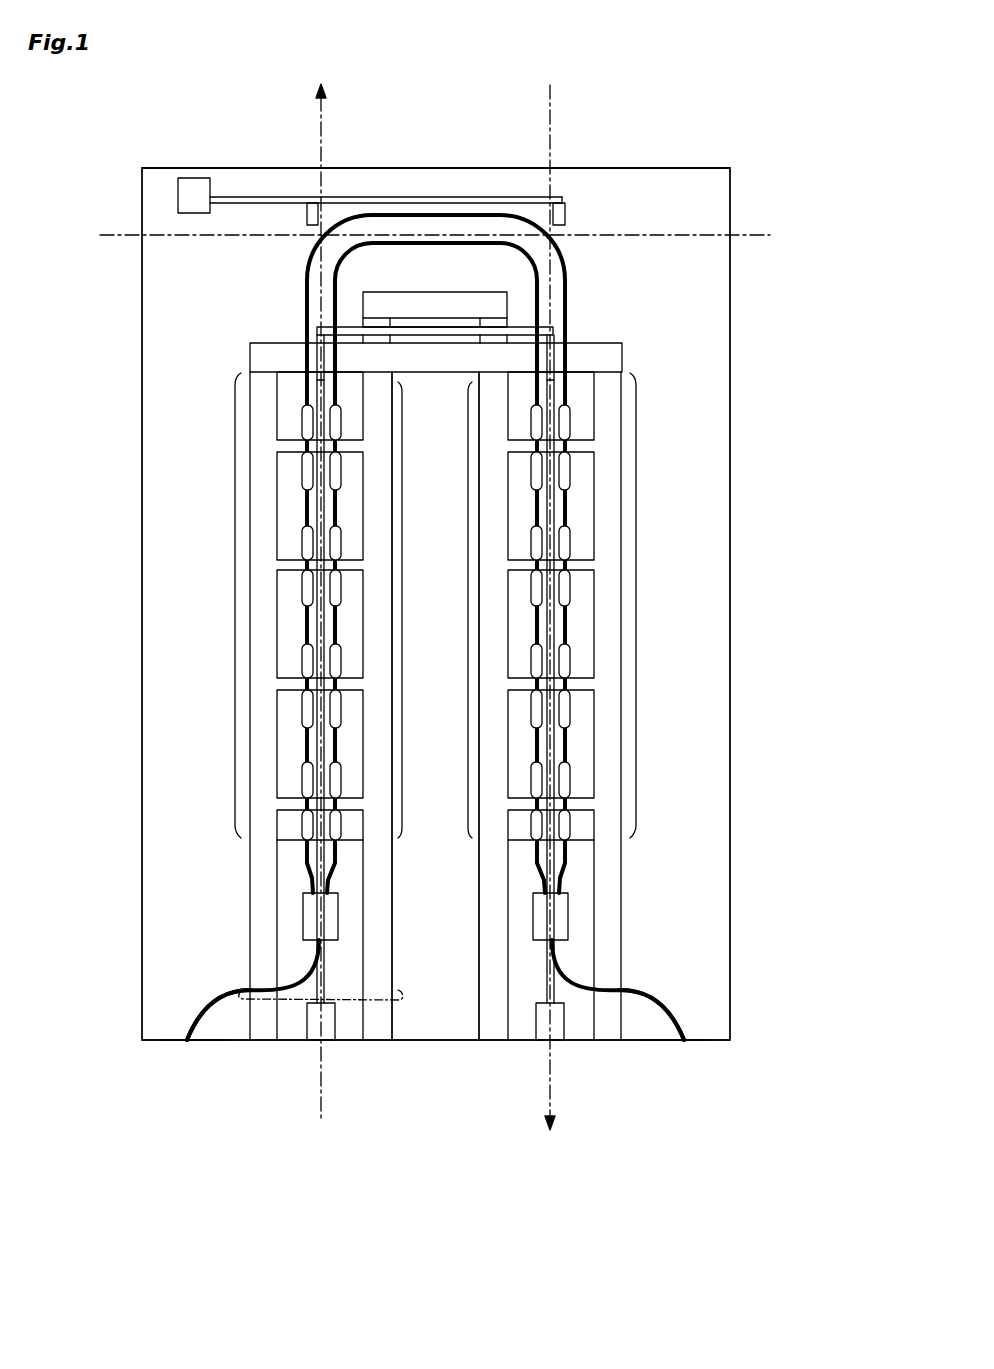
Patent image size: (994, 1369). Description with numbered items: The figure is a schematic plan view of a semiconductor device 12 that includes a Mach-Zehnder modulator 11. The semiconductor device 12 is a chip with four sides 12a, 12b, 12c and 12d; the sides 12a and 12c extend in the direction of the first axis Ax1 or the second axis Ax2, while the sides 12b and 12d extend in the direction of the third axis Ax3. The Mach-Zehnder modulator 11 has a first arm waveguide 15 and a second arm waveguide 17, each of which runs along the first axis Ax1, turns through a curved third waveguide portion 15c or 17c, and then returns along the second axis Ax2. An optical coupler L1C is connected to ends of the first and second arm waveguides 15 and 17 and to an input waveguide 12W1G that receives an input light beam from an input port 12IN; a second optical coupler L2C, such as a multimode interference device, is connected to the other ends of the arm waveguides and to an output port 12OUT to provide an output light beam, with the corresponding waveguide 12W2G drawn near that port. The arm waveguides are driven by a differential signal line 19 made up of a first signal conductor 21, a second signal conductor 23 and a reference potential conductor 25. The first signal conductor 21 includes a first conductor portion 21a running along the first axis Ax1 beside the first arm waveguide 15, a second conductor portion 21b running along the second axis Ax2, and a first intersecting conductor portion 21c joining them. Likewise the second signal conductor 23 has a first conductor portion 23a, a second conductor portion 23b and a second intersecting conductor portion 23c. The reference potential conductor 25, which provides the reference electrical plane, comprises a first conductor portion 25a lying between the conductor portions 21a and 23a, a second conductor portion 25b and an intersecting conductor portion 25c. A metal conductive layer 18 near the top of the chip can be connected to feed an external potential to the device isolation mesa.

The semiconductor device 12 is at (724, 162).
The side 12a is at (140, 664).
The side 12b is at (433, 1043).
The side 12c is at (733, 670).
The side 12d is at (471, 165).
The Mach-Zehnder modulator 11 is at (588, 212).
The input port 12IN is at (185, 1042).
The output port 12OUT is at (684, 1025).
The input waveguide 12W1G is at (210, 1035).
The second waveguide portion 12W2G is at (680, 1020).
The first arm waveguide 15 is at (305, 270).
The third waveguide portion 15c is at (393, 213).
The second arm waveguide 17 is at (465, 260).
The third waveguide portion 17c is at (467, 243).
The metal conductive layer 18 is at (257, 195).
The differential signal line 19 is at (400, 1000).
The first signal conductor 21 is at (247, 902).
The first conductor portion 21a is at (237, 605).
The second conductor portion 21b is at (633, 605).
The first intersecting conductor portion 21c is at (438, 360).
The second signal conductor 23 is at (393, 903).
The first conductor portion 23a is at (403, 600).
The second conductor portion 23b is at (469, 640).
The second intersecting conductor portion 23c is at (495, 323).
The reference potential conductor 25 is at (318, 947).
The first conductor portion 25a is at (317, 390).
The second conductor portion 25b is at (553, 390).
The intersecting conductor portion 25c is at (350, 323).
The optical coupler L1C is at (339, 927).
The optical coupler L2C is at (532, 930).
The first axis Ax1 is at (318, 1093).
The second axis Ax2 is at (556, 1093).
The third axis Ax3 is at (767, 243).